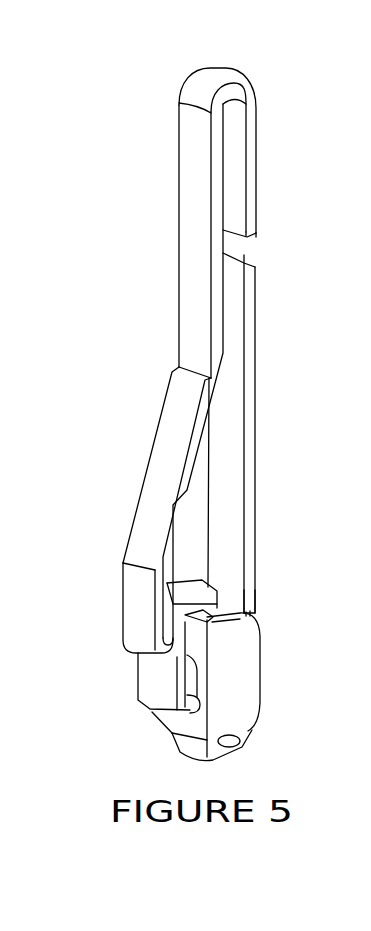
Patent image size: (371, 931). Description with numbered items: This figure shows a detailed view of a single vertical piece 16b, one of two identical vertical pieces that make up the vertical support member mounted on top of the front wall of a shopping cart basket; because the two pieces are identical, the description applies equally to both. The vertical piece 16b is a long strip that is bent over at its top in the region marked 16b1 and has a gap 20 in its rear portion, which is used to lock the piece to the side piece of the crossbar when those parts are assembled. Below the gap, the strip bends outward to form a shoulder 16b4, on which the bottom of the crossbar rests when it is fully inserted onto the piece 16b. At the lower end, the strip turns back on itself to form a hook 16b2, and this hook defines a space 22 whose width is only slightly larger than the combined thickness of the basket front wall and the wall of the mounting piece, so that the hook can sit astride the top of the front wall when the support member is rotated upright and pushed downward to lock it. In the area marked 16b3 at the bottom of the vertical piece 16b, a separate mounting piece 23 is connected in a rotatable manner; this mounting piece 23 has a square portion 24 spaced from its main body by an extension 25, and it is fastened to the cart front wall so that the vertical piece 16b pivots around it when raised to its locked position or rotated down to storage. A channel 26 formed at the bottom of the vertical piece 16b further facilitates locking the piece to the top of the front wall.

The vertical piece 16b is at (160, 324).
The bent top loop of clip 16b1 is at (233, 70).
The hook 16b2 is at (133, 633).
The area at bottom of vertical piece 16b3 is at (258, 603).
The shoulder 16b4 is at (175, 370).
The gap 20 is at (252, 250).
The space 22 is at (193, 632).
The mounting piece 23 is at (242, 647).
The square portion 24 is at (152, 683).
The extension 25 is at (175, 716).
The channel 26 is at (237, 742).